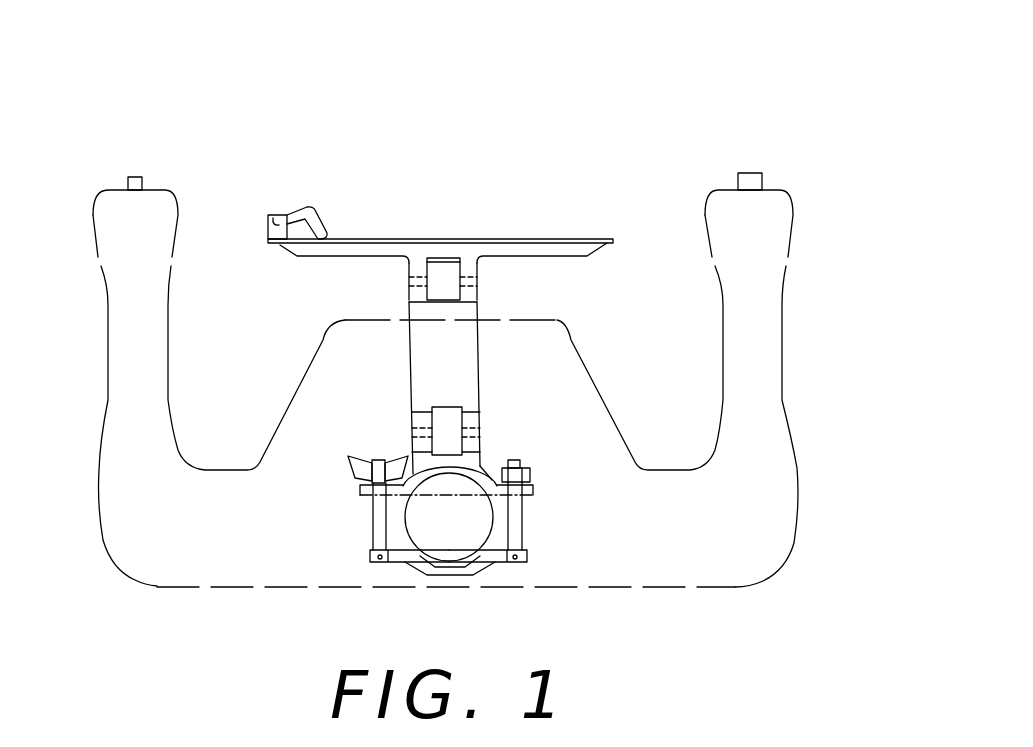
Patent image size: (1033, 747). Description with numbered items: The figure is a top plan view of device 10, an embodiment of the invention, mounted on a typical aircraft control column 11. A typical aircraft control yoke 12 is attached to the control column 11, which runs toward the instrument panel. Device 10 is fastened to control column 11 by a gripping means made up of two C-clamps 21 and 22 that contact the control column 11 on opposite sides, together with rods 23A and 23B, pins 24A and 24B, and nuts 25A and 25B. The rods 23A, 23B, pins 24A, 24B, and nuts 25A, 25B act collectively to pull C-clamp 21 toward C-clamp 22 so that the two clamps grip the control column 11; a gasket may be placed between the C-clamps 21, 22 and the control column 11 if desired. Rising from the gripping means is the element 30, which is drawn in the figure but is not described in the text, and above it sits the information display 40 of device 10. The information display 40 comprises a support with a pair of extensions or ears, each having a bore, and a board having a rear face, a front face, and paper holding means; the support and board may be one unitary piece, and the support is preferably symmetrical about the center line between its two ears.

The device 10 is at (386, 305).
The control column 11 is at (408, 537).
The control yoke 12 is at (103, 183).
The C-clamp 21 is at (437, 580).
The C-clamp 22 is at (480, 463).
The rod 23A is at (520, 528).
The rod 23B is at (370, 517).
The pin 24A is at (517, 560).
The pin 24B is at (372, 556).
The nut 25A is at (530, 477).
The nut 25B is at (347, 468).
The support column 30 is at (410, 378).
The information display 40 is at (618, 227).